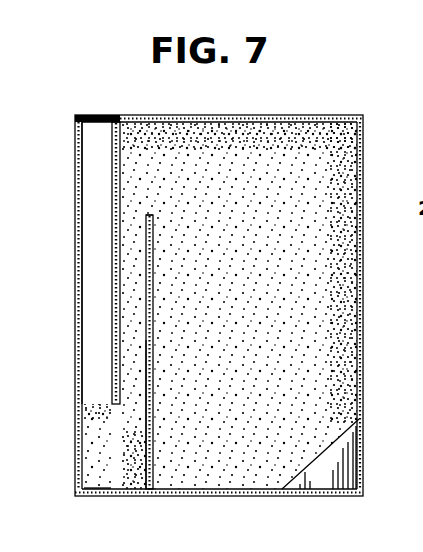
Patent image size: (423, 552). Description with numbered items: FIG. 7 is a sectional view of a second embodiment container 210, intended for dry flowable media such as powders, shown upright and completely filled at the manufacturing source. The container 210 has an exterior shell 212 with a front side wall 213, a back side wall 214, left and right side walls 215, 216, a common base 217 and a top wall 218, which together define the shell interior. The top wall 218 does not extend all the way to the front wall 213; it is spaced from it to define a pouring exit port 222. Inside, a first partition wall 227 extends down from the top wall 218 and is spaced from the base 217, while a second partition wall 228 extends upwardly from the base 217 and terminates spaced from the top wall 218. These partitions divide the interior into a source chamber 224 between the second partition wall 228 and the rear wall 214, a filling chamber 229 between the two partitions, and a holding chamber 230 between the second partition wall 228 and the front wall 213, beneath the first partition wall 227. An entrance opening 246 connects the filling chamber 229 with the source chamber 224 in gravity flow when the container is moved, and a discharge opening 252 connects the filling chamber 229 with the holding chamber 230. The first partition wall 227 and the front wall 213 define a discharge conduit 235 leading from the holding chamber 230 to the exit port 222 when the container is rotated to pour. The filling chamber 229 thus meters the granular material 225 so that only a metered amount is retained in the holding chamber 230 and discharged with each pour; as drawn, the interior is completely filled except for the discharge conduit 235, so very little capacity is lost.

The container 210 is at (283, 100).
The exterior shell 212 is at (362, 203).
The front side wall 213 is at (75, 321).
The back side wall 214 is at (364, 318).
The left side wall 215 is at (103, 153).
The right side wall 216 is at (333, 497).
The common base 217 is at (197, 497).
The top wall 218 is at (177, 113).
The pouring exit port 222 is at (90, 117).
The source chamber 224 is at (322, 308).
The granular material 225 is at (292, 411).
The first partition wall 227 is at (112, 234).
The second partition wall 228 is at (150, 343).
The filling chamber 229 is at (132, 292).
The holding chamber 230 is at (118, 468).
The discharge conduit 235 is at (97, 356).
The entrance opening 246 is at (132, 220).
The discharge opening 252 is at (133, 408).